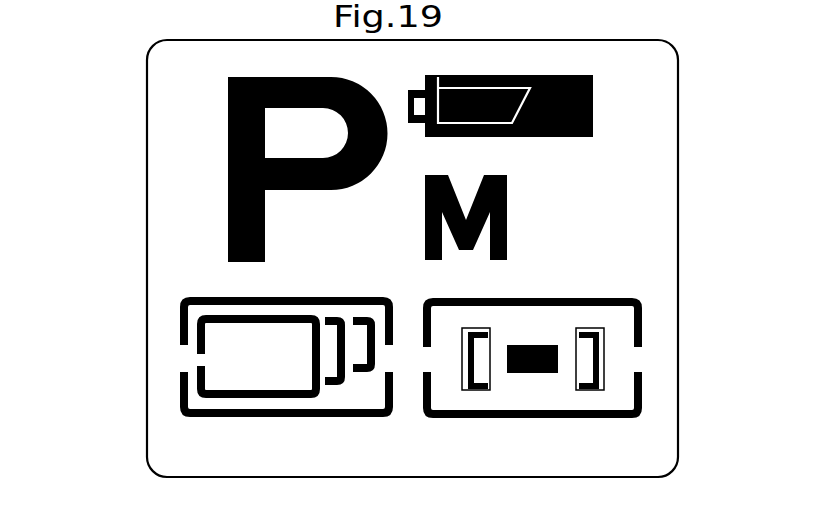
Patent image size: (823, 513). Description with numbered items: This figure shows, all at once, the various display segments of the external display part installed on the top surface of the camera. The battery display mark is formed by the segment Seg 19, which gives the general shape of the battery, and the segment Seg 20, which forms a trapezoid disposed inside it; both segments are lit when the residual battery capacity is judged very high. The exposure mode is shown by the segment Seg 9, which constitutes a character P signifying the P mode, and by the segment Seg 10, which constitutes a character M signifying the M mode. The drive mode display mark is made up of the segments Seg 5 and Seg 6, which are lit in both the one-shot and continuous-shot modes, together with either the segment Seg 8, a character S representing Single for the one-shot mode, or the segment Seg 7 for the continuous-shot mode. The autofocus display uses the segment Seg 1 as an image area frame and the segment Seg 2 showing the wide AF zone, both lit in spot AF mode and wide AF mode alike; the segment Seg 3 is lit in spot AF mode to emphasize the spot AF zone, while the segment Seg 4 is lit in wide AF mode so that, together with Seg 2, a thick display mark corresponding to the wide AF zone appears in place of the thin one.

The segment Seg 1 is at (440, 405).
The segment Seg 2 is at (493, 326).
The segment Seg 3 is at (529, 380).
The segment Seg 4 is at (495, 337).
The segment Seg 5 is at (181, 427).
The segment Seg 6 is at (320, 406).
The segment Seg 7 is at (358, 380).
The segment Seg 8 is at (231, 349).
The segment Seg 9 is at (316, 202).
The segment Seg 10 is at (514, 173).
The segment Seg 19 is at (602, 111).
The segment Seg 20 is at (441, 68).